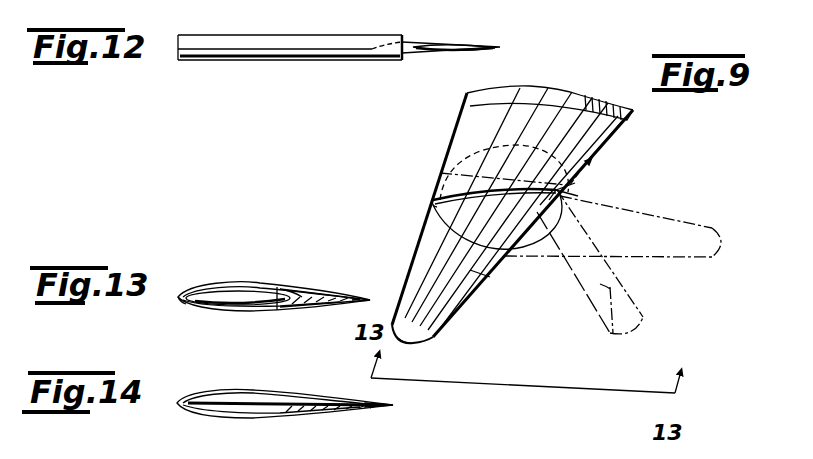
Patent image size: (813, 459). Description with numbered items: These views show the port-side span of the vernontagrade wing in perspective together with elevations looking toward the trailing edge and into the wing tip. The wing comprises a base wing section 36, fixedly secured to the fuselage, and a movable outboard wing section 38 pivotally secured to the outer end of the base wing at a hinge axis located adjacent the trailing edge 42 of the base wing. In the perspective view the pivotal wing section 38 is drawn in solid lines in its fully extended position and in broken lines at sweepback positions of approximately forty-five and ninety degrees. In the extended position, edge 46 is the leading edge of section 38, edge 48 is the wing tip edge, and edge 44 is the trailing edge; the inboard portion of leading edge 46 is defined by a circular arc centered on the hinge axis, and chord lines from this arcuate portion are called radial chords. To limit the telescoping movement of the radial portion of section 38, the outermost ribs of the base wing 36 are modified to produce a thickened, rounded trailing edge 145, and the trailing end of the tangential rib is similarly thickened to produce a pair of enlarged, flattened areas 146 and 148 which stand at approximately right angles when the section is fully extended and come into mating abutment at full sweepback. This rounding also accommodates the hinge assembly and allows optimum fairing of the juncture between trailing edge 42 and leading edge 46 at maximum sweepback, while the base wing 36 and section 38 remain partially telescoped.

In FIG. 12, the base wing section 36 is at (326, 35).
In FIG. 9, the base wing section 36 is at (467, 130).
In FIG. 13, the base wing section 36 is at (251, 283).
In FIG. 14, the base wing section 36 is at (258, 390).
In FIG. 12, the movable outboard wing section 38 is at (413, 41).
In FIG. 9, the movable outboard wing section 38 is at (430, 252).
In FIG. 12, the trailing edge 42 is at (254, 46).
In FIG. 9, the trailing edge 42 is at (612, 146).
In FIG. 13, the trailing edge 42 is at (320, 290).
In FIG. 9, the trailing edge 44 is at (490, 277).
In FIG. 13, the trailing edge 44 is at (278, 308).
In FIG. 9, the leading edge 46 is at (423, 217).
In FIG. 13, the leading edge 46 is at (182, 303).
In FIG. 14, the leading edge 46 is at (255, 413).
In FIG. 12, the wing tip edge 48 is at (456, 46).
In FIG. 9, the wing tip edge 48 is at (403, 340).
In FIG. 13, the wing tip edge 48 is at (218, 303).
In FIG. 14, the wing tip edge 48 is at (396, 408).
In FIG. 9, the thickened trailing edge 145 is at (575, 183).
In FIG. 9, the enlarged flattened area 146 is at (578, 196).
In FIG. 9, the enlarged flattened area 148 is at (549, 200).